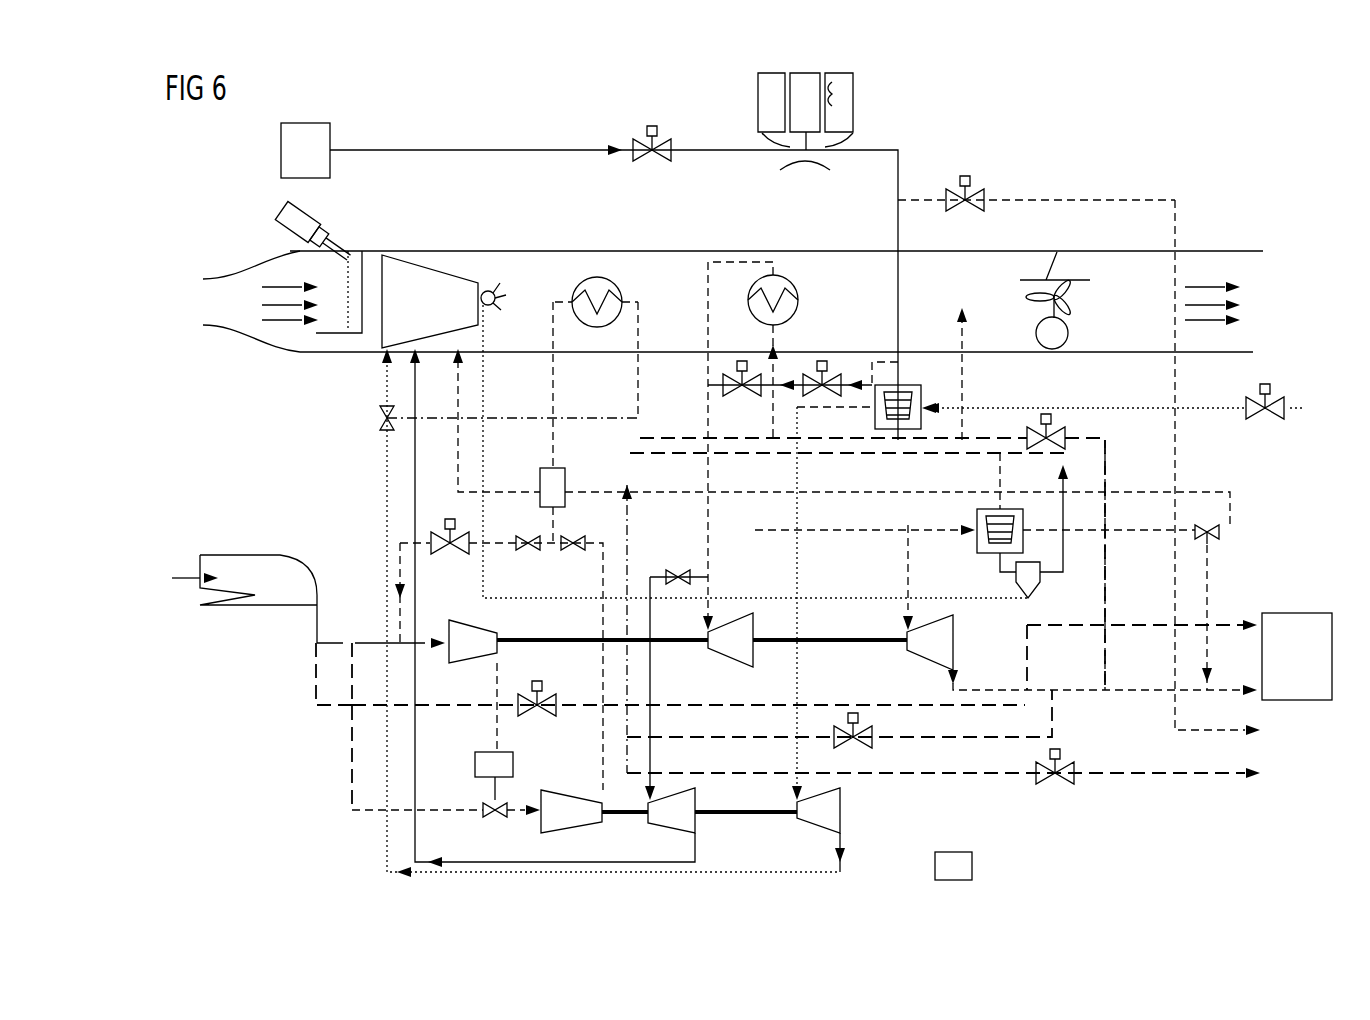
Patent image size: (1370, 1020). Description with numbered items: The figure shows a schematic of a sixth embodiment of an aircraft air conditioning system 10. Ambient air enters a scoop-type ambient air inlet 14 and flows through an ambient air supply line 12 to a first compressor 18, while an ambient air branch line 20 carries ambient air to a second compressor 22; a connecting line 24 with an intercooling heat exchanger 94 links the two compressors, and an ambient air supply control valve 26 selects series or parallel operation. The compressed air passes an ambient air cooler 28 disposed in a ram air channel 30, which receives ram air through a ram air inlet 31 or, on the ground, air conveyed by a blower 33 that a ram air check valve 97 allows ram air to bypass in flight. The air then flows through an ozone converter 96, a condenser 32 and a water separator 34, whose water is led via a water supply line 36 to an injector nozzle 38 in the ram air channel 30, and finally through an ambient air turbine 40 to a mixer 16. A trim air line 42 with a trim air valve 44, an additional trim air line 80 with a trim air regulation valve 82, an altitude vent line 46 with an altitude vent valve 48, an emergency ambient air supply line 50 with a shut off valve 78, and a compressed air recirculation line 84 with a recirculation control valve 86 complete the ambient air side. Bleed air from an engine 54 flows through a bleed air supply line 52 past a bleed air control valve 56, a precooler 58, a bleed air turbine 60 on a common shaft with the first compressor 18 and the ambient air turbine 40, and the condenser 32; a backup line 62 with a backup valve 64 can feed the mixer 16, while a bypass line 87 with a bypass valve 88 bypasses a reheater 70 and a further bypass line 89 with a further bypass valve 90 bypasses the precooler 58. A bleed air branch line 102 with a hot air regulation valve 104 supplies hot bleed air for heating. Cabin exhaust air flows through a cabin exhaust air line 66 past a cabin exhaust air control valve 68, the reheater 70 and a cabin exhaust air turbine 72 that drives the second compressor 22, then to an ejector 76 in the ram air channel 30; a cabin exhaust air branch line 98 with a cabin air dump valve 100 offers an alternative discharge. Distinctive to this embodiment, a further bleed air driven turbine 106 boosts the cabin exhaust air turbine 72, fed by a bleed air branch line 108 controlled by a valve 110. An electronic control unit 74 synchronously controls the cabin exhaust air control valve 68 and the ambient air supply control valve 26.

The aircraft air conditioning system 10 is at (1152, 130).
The ambient air supply line 12 is at (557, 380).
The ambient air inlet 14 is at (247, 552).
The mixer 16 is at (1300, 612).
The first compressor 18 is at (451, 618).
The ambient air branch line 20 is at (350, 752).
The second compressor 22 is at (562, 798).
The connecting line 24 is at (493, 728).
The ambient air supply control valve 26 is at (490, 815).
The ambient air cooler 28 is at (572, 296).
The ram air channel 30 is at (1190, 250).
The ram air inlet 31 is at (222, 298).
The condenser 32 is at (972, 525).
The blower 33 is at (1068, 286).
The water separator 34 is at (1042, 580).
The water supply line 36 is at (487, 378).
The injector nozzle 38 is at (490, 288).
The ambient air turbine 40 is at (958, 640).
The trim air line 42 is at (985, 740).
The trim air valve 44 is at (873, 742).
The altitude vent line 46 is at (1108, 475).
The altitude vent valve 48 is at (1078, 438).
The emergency ambient air supply line 50 is at (562, 702).
The bleed air supply line 52 is at (402, 150).
The engine 54 is at (280, 152).
The bleed air control valve 56 is at (653, 124).
The precooler 58 is at (782, 278).
The bleed air turbine 60 is at (725, 620).
The backup line 62 is at (1212, 585).
The backup valve 64 is at (1222, 535).
The cabin exhaust air line 66 is at (1215, 412).
The cabin exhaust air control valve 68 is at (1290, 410).
The reheater 70 is at (875, 413).
The cabin exhaust air turbine 72 is at (845, 828).
The electronic control unit 74 is at (933, 866).
The ejector 76 is at (420, 268).
The shut off valve 78 is at (538, 716).
The additional trim air line 80 is at (930, 775).
The trim air regulation valve 82 is at (1050, 780).
The compressed air recirculation line 84 is at (396, 545).
The recirculation control valve 86 is at (445, 527).
The bypass line 87 is at (896, 378).
The bypass valve 88 is at (822, 362).
The further bypass line 89 is at (720, 385).
The further bypass valve 90 is at (742, 360).
The heat exchanger 94 is at (474, 762).
The ozone converter 96 is at (567, 475).
The ram air check valve 97 is at (1048, 263).
The cabin exhaust air branch line 98 is at (964, 378).
The cabin air dump valve 100 is at (377, 418).
The bleed air branch line 102 is at (1018, 200).
The hot air regulation valve 104 is at (965, 178).
The further bleed air driven turbine 106 is at (697, 832).
The bleed air branch line 108 is at (653, 680).
The valve 110 is at (683, 568).